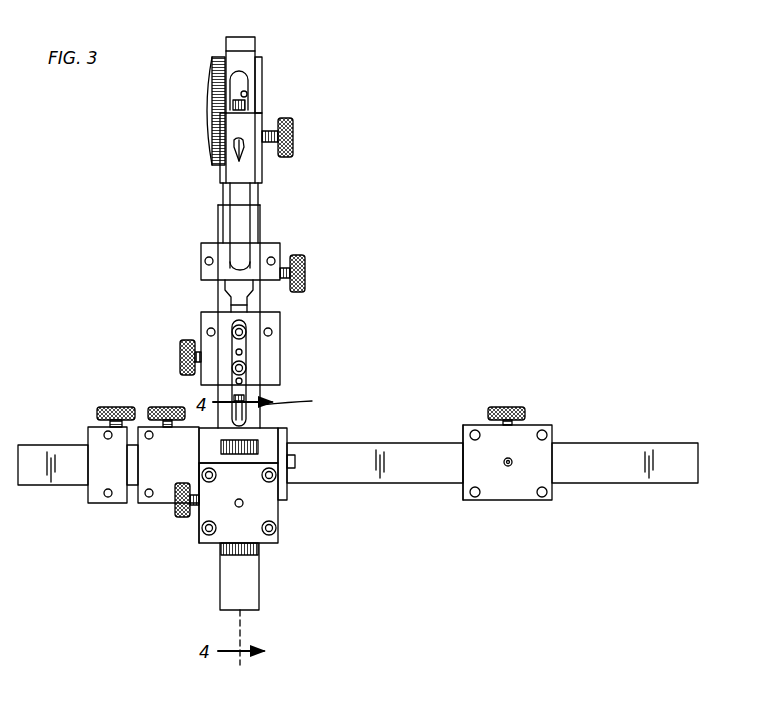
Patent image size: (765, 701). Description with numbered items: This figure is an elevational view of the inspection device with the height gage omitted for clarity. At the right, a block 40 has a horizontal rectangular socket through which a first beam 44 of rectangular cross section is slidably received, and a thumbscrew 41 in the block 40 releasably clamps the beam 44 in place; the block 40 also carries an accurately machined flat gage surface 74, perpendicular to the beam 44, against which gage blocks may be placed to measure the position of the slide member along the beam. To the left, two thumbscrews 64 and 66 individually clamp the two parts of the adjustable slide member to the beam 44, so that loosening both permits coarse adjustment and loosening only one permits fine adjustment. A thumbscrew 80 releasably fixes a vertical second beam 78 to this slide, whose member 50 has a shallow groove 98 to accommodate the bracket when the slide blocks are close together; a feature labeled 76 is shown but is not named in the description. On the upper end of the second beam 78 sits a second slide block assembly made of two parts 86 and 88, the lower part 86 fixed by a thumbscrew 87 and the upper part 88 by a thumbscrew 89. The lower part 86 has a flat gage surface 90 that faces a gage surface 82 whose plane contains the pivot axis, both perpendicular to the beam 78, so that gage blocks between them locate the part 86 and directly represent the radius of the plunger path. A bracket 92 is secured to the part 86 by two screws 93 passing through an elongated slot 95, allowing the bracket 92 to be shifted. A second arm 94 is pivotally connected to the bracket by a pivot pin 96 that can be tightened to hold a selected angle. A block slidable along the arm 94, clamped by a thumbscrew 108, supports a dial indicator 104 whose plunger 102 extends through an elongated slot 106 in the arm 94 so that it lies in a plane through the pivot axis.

The block 40 is at (510, 500).
The thumbscrew 41 is at (515, 388).
The first beam 44 is at (395, 486).
The member 50 is at (278, 538).
The thumbscrew 64 is at (155, 406).
The thumbscrew 66 is at (105, 406).
The flat gage surface 74 is at (463, 432).
The block side 76 is at (199, 543).
The second beam 78 is at (260, 216).
The thumbscrew 80 is at (175, 508).
The gage surface 82 is at (270, 465).
The part 86 is at (200, 322).
The thumbscrew 87 is at (180, 350).
The part 88 is at (200, 266).
The thumbscrew 89 is at (305, 282).
The flat gage surface 90 is at (247, 385).
The bracket 92 is at (298, 402).
The screws 93 is at (246, 333).
The second arm 94 is at (256, 47).
The elongated slot 95 is at (243, 380).
The pivot pin 96 is at (250, 298).
The groove 98 is at (255, 327).
The plunger 102 is at (242, 150).
The dial indicator 104 is at (207, 100).
The elongated slot 106 is at (247, 94).
The thumbscrew 108 is at (294, 128).